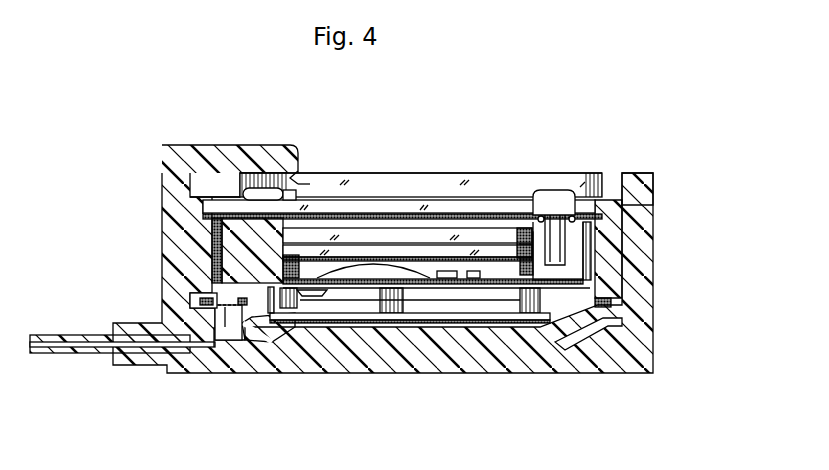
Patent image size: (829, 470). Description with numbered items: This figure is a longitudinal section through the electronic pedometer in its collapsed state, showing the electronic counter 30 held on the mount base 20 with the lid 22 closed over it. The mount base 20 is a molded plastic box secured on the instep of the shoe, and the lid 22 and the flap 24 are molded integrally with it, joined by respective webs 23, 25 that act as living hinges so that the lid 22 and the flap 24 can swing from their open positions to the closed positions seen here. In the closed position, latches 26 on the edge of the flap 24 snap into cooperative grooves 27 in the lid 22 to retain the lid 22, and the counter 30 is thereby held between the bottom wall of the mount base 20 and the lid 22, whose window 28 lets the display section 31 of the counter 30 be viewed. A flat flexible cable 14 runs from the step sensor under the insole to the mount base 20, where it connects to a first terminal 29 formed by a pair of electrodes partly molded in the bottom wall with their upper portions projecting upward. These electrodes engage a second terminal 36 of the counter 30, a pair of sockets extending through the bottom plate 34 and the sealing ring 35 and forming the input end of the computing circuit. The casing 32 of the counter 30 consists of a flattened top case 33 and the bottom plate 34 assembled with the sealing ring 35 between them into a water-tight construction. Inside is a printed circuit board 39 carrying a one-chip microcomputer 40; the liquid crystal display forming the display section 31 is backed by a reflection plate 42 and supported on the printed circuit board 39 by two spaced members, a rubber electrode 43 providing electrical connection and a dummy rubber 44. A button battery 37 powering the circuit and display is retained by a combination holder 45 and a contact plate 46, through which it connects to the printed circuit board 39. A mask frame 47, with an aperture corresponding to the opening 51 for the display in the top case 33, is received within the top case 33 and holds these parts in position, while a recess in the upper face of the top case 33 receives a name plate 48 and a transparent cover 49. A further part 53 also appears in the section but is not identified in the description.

The flexible cable 14 is at (50, 355).
The mount base 20 is at (653, 372).
The lid 22 is at (478, 173).
The web 23 is at (645, 180).
The flap 24 is at (195, 147).
The web 25 is at (195, 204).
The latches 26 is at (300, 170).
The grooves 27 is at (306, 184).
The window 28 is at (510, 185).
The first terminal 29 is at (220, 345).
The electronic counter 30 is at (592, 340).
The display section 31 is at (375, 240).
The casing 32 is at (200, 245).
The top case 33 is at (603, 245).
The bottom plate 34 is at (322, 345).
The sealing ring 35 is at (612, 303).
The second terminal 36 is at (205, 294).
The button battery 37 is at (448, 278).
The printed circuit board 39 is at (382, 300).
The one-chip microcomputer 40 is at (358, 284).
The reflection plate 42 is at (462, 292).
The rubber electrode 43 is at (540, 330).
The dummy rubber 44 is at (272, 322).
The combination holder 45 is at (396, 268).
The contact plate 46 is at (416, 300).
The mask frame 47 is at (247, 243).
The name plate 48 is at (267, 190).
The transparent cover 49 is at (440, 205).
The opening 51 is at (294, 190).
The pin 53 is at (557, 195).